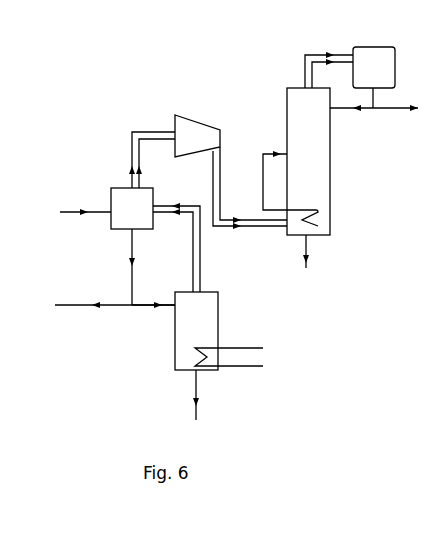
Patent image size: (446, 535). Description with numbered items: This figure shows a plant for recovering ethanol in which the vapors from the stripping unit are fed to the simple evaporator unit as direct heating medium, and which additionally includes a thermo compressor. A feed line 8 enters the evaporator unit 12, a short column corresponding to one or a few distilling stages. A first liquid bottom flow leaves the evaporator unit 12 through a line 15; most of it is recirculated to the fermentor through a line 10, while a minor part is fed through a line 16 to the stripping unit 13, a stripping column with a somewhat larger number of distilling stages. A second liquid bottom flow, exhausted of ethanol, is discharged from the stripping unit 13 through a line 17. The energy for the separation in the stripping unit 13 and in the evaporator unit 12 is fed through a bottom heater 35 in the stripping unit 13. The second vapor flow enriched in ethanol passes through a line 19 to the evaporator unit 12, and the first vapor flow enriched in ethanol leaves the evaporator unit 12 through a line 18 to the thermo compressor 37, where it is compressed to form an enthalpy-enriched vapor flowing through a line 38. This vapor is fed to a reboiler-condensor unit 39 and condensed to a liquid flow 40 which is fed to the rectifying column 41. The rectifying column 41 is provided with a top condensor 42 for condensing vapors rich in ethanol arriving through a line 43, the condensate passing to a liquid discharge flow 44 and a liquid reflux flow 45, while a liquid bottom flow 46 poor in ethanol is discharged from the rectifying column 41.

The line 8 is at (67, 211).
The line 10 is at (62, 304).
The evaporator unit 12 is at (147, 199).
The stripping unit 13 is at (212, 320).
The line 15 is at (133, 243).
The line 16 is at (146, 306).
The line 17 is at (198, 397).
The line 18 is at (147, 128).
The line 19 is at (201, 257).
The bottom heater 35 is at (256, 348).
The thermo compressor 37 is at (196, 117).
The line 38 is at (222, 198).
The reboiler-condensor unit 39 is at (313, 208).
The liquid flow 40 is at (263, 161).
The rectifying column 41 is at (331, 159).
The top condensor 42 is at (396, 62).
The line 43 is at (318, 54).
The liquid discharge flow 44 is at (402, 110).
The liquid reflux flow 45 is at (348, 110).
The liquid bottom flow 46 is at (325, 254).